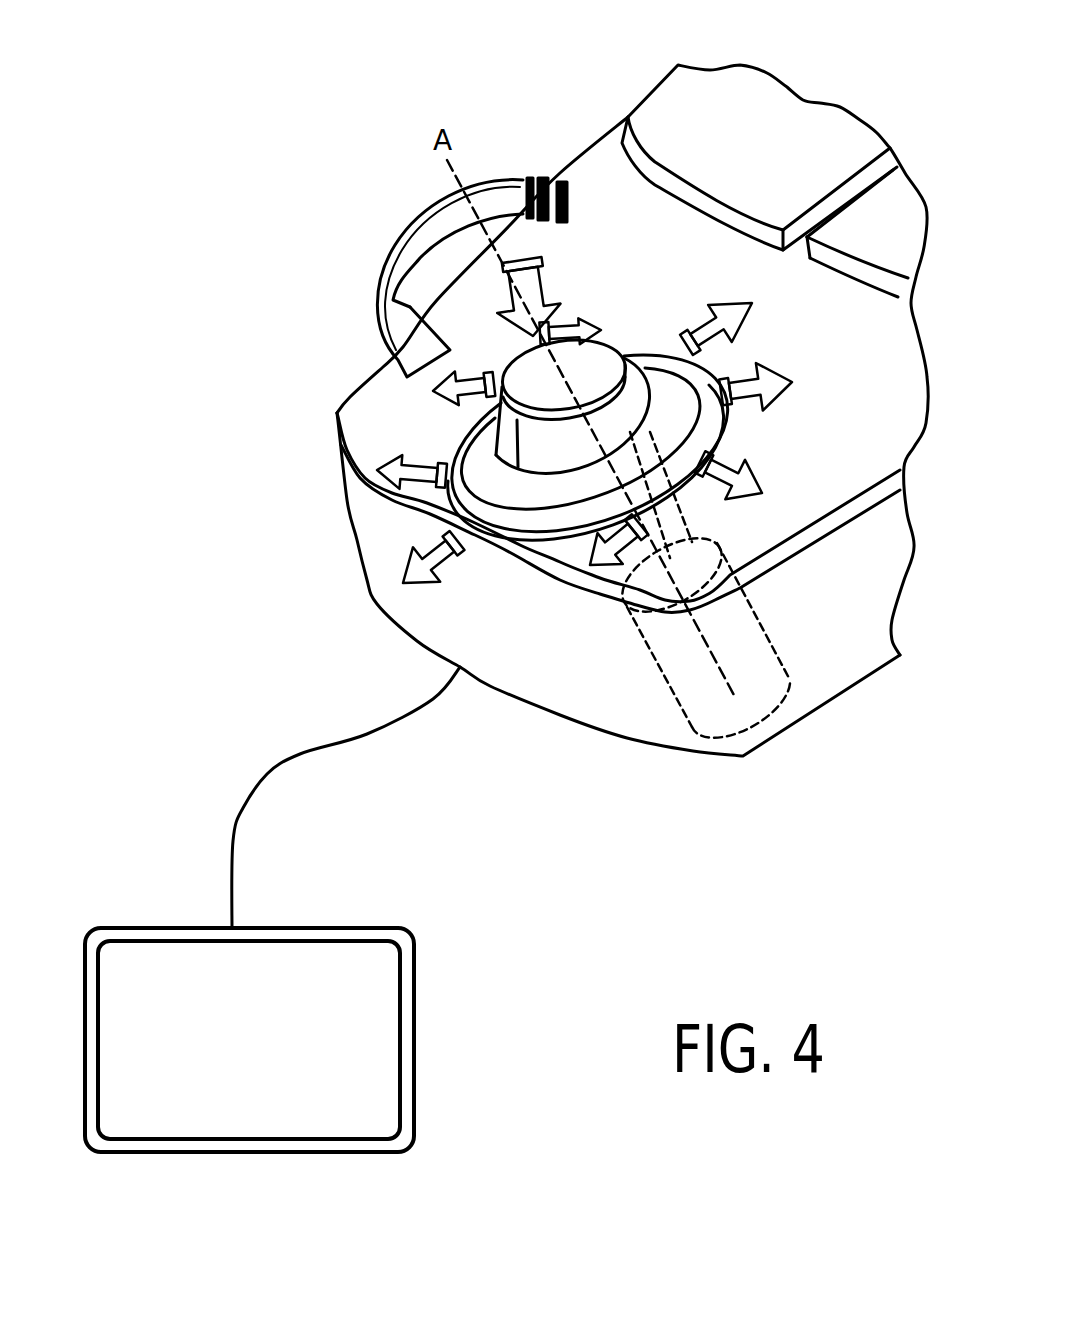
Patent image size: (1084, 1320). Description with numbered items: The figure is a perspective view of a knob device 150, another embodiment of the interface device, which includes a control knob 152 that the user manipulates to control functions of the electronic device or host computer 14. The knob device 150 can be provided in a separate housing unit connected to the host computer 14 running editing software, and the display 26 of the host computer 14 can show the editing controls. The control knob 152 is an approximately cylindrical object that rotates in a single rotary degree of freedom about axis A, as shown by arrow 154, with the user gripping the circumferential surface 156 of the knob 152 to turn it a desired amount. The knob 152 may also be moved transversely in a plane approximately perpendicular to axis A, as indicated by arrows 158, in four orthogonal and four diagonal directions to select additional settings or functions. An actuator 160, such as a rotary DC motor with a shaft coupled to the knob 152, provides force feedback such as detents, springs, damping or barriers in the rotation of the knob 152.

The host computer 14 is at (455, 973).
The display 26 is at (208, 1105).
The knob device 150 is at (698, 53).
The control knob 152 is at (607, 368).
The arrow 154 is at (390, 258).
The circumferential surface 156 is at (545, 450).
The arrows 158 is at (755, 314).
The actuator 160 is at (663, 678).